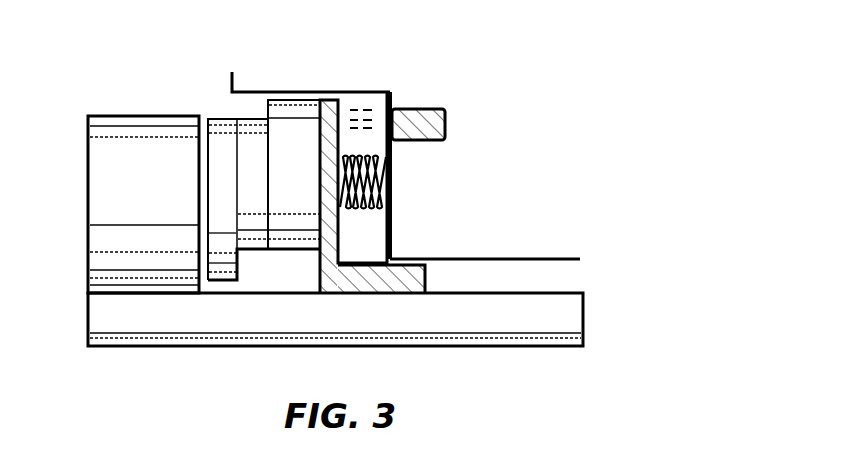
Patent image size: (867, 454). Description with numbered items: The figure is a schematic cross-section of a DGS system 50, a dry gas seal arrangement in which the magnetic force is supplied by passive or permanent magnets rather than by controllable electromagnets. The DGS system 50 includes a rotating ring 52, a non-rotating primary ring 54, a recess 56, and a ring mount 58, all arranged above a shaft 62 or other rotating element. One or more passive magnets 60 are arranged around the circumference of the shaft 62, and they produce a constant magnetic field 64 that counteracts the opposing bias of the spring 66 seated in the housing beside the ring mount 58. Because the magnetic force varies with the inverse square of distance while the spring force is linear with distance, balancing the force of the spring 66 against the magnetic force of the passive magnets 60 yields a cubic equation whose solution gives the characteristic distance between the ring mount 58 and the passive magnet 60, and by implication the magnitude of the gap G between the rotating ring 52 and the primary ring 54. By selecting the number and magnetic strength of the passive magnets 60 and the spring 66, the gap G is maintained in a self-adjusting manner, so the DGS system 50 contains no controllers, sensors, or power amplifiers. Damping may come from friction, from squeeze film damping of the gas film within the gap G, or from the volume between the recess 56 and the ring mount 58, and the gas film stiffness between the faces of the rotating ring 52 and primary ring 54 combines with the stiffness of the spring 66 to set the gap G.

The DGS system 50 is at (430, 33).
The rotating ring 52 is at (95, 156).
The non-rotating primary ring 54 is at (220, 118).
The recess 56 is at (252, 93).
The ring mount 58 is at (408, 272).
The passive magnet 60 is at (427, 118).
The shaft 62 is at (95, 313).
The magnetic field 64 is at (370, 88).
The spring 66 is at (378, 182).
The gap G is at (203, 118).